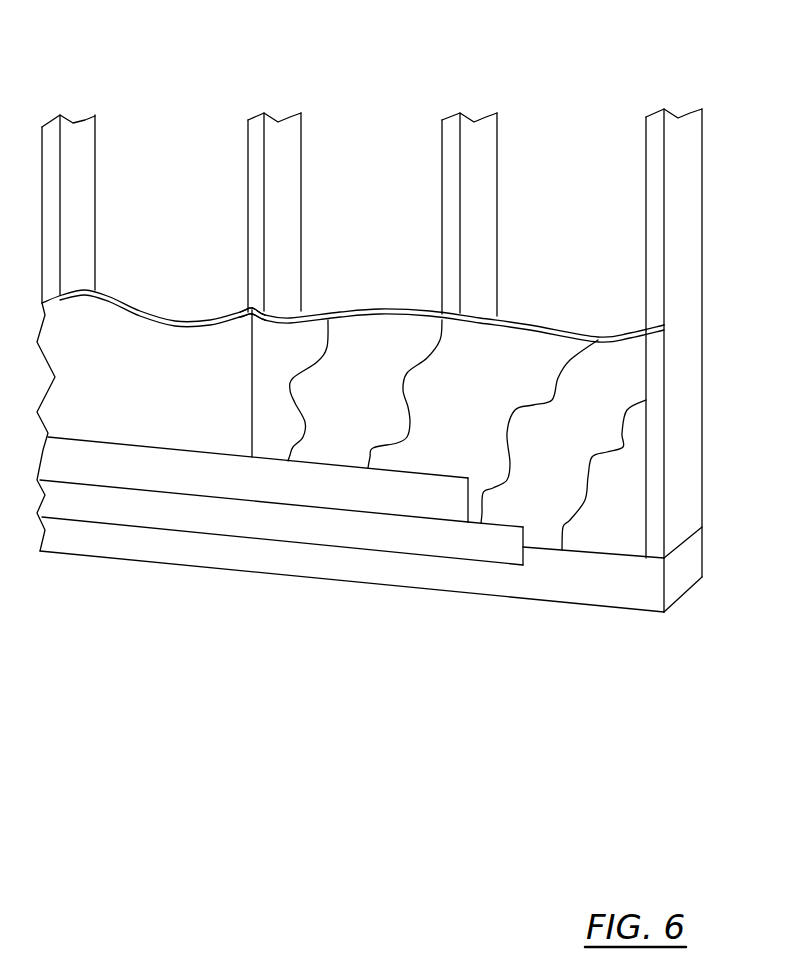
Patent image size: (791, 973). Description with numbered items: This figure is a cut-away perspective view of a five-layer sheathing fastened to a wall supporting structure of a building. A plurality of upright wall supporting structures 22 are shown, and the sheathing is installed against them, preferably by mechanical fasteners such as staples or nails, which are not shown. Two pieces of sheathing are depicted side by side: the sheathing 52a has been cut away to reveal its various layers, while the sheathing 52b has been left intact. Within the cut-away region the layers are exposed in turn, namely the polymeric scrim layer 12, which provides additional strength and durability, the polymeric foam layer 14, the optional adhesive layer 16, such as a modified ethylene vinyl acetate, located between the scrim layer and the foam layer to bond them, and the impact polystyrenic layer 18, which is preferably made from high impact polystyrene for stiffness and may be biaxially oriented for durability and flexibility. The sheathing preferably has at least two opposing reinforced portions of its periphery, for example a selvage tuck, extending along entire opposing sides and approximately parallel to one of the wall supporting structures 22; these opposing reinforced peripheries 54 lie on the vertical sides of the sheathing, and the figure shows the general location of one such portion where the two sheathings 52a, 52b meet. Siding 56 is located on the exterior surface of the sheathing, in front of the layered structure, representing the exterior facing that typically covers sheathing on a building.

The polymeric scrim layer 12 is at (268, 376).
The polymeric foam layer 14 is at (538, 468).
The adhesive layer 16 is at (343, 400).
The impact polystyrenic layer 18 is at (445, 426).
The wall supporting structures 22 is at (88, 113).
The sheathing 52a is at (560, 306).
The sheathing 52b is at (118, 276).
The opposing reinforced peripheries 54 is at (238, 304).
The siding 56 is at (150, 482).